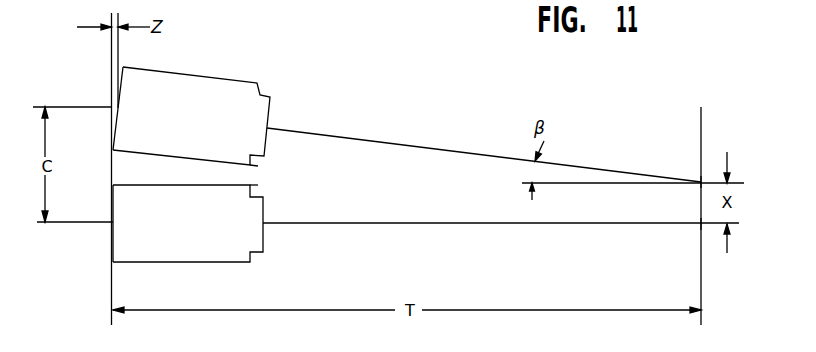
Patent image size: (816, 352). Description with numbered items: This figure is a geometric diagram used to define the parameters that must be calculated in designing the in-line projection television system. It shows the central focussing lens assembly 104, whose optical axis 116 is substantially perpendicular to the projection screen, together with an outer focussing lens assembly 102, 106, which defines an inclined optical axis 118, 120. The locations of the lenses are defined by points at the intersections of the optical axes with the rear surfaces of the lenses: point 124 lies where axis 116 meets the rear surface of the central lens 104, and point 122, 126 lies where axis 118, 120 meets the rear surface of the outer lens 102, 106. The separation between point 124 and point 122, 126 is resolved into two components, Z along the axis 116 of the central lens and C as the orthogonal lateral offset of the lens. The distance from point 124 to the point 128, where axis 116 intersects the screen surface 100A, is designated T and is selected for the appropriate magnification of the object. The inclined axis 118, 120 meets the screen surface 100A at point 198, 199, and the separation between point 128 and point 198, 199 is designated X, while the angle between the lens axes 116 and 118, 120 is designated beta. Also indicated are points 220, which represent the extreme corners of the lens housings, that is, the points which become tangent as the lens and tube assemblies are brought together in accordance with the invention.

The screen surface 100A is at (702, 158).
The focussing lens assembly 102 is at (219, 101).
The focussing lens assembly 106 is at (219, 101).
The focussing lens assembly 104 is at (188, 240).
The optical axis 116 is at (379, 225).
The optical axis 118 is at (484, 131).
The optical axis 120 is at (388, 141).
The point 122 is at (161, 108).
The point 126 is at (117, 104).
The point 124 is at (115, 222).
The point 128 is at (701, 226).
The point 198 is at (656, 153).
The point 199 is at (701, 182).
The points 220 is at (252, 164).